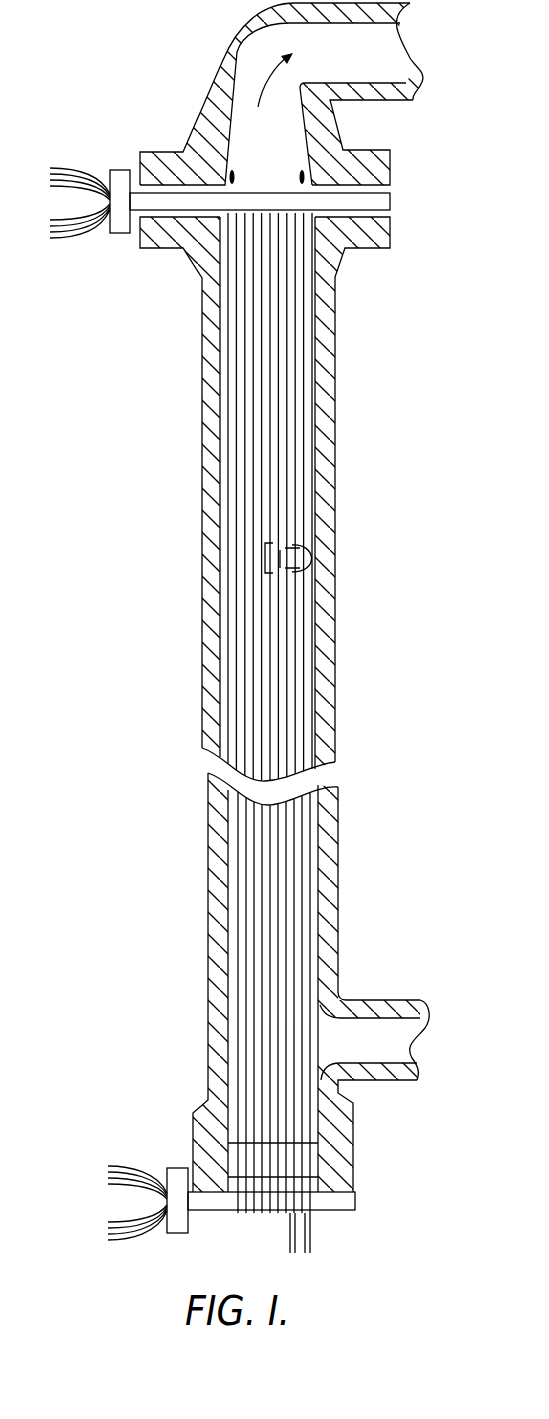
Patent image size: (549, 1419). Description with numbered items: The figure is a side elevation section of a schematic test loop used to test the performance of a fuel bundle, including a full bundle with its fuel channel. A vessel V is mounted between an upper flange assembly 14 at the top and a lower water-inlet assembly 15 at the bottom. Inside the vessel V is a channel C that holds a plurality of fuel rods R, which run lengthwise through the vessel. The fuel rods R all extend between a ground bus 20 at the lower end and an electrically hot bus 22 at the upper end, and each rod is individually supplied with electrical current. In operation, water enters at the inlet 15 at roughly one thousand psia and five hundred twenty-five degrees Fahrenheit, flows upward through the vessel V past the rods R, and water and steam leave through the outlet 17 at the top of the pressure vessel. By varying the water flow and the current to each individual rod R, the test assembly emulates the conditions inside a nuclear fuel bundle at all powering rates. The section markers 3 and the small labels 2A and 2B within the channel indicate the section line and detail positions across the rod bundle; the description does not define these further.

The upper flange assembly 14 is at (177, 152).
The outlet at top of pressure vessel 17 is at (403, 53).
The electrically hot bus 22 is at (118, 170).
The vessel V is at (198, 482).
The channel C is at (228, 638).
The fuel rods R is at (268, 425).
The tube spacer element 2A is at (269, 560).
The tube spacer element 2B is at (318, 553).
The section line 3- 3 is at (168, 537).
The lower water-inlet assembly 15 is at (347, 1092).
The ground bus 20 is at (208, 1203).